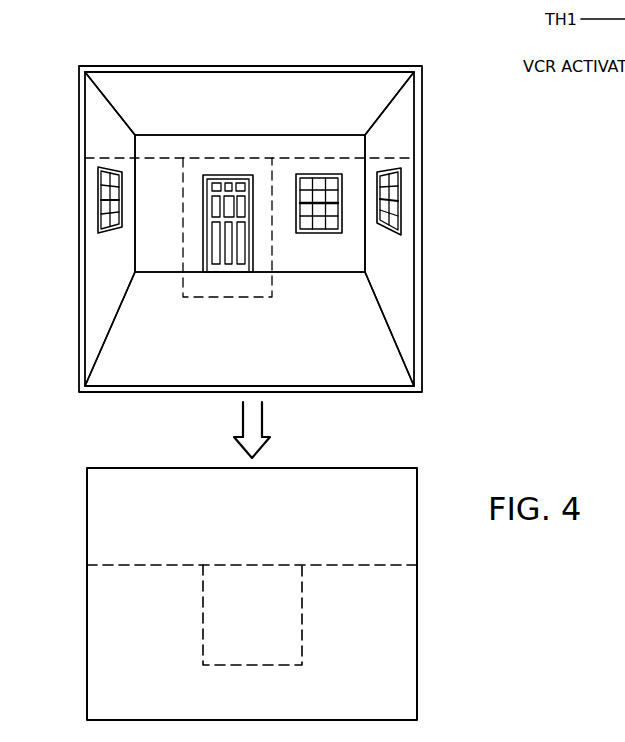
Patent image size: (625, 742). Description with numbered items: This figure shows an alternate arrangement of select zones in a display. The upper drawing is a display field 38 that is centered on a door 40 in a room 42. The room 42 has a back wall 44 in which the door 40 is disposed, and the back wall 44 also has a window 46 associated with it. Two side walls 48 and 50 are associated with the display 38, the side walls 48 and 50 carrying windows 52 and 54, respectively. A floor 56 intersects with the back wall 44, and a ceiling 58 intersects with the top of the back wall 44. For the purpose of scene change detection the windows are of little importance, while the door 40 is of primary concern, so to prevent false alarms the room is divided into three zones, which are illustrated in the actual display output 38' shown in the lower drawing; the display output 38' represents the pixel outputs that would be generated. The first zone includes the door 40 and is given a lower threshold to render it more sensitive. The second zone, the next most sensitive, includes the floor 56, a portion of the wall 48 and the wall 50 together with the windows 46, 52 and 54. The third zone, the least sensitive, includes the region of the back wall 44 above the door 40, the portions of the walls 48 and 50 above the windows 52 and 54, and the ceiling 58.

The display field 38 is at (227, 229).
The display output 38' is at (228, 594).
The door 40 is at (221, 173).
The room 42 is at (157, 100).
The back wall 44 is at (176, 146).
The window 46 is at (304, 233).
The side wall 48 is at (410, 344).
The side wall 50 is at (93, 349).
The window 52 is at (401, 193).
The window 54 is at (98, 190).
The floor 56 is at (287, 373).
The ceiling 58 is at (123, 81).